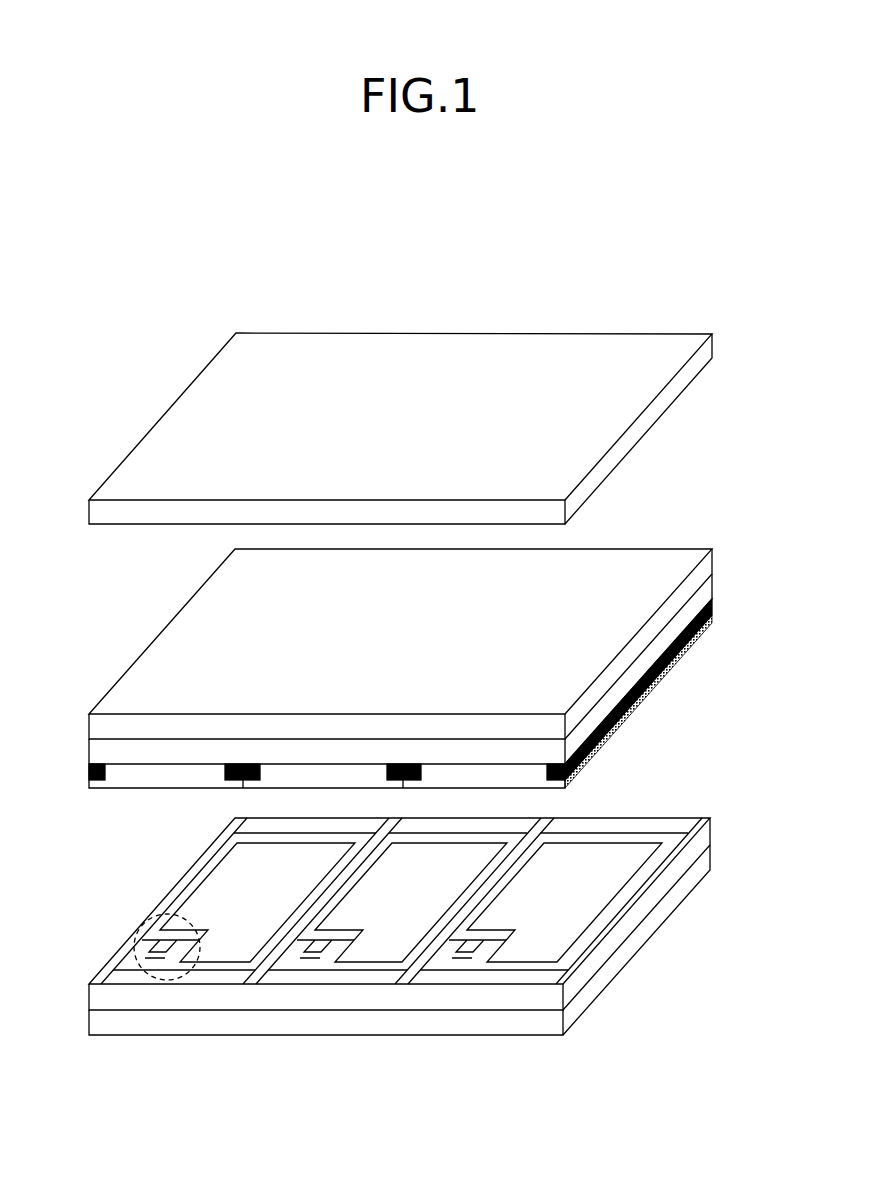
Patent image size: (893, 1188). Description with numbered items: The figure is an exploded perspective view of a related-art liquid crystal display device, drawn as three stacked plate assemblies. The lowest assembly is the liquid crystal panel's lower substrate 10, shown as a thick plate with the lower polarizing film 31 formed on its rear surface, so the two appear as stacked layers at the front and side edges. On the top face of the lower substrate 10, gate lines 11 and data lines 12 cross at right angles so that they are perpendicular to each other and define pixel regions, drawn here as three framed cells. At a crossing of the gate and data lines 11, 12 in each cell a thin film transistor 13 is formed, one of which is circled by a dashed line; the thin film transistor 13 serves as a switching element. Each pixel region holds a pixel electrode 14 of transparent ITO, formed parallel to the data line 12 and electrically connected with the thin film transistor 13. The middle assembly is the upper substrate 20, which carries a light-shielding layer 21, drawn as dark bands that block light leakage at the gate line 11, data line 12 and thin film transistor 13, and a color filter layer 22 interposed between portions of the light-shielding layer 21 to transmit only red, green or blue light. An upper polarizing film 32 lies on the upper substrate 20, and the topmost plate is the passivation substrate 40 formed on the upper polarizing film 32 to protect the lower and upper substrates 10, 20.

The lower substrate 10 is at (405, 940).
The gate line 11 is at (195, 980).
The data line 12 is at (113, 963).
The thin film transistor 13 is at (148, 930).
The pixel electrode 14 is at (222, 880).
The upper substrate 20 is at (712, 582).
The light-shielding layer 21 is at (712, 607).
The color filter layer 22 is at (712, 622).
The lower polarizing film 31 is at (712, 858).
The upper polarizing film 32 is at (712, 560).
The passivation substrate 40 is at (712, 343).